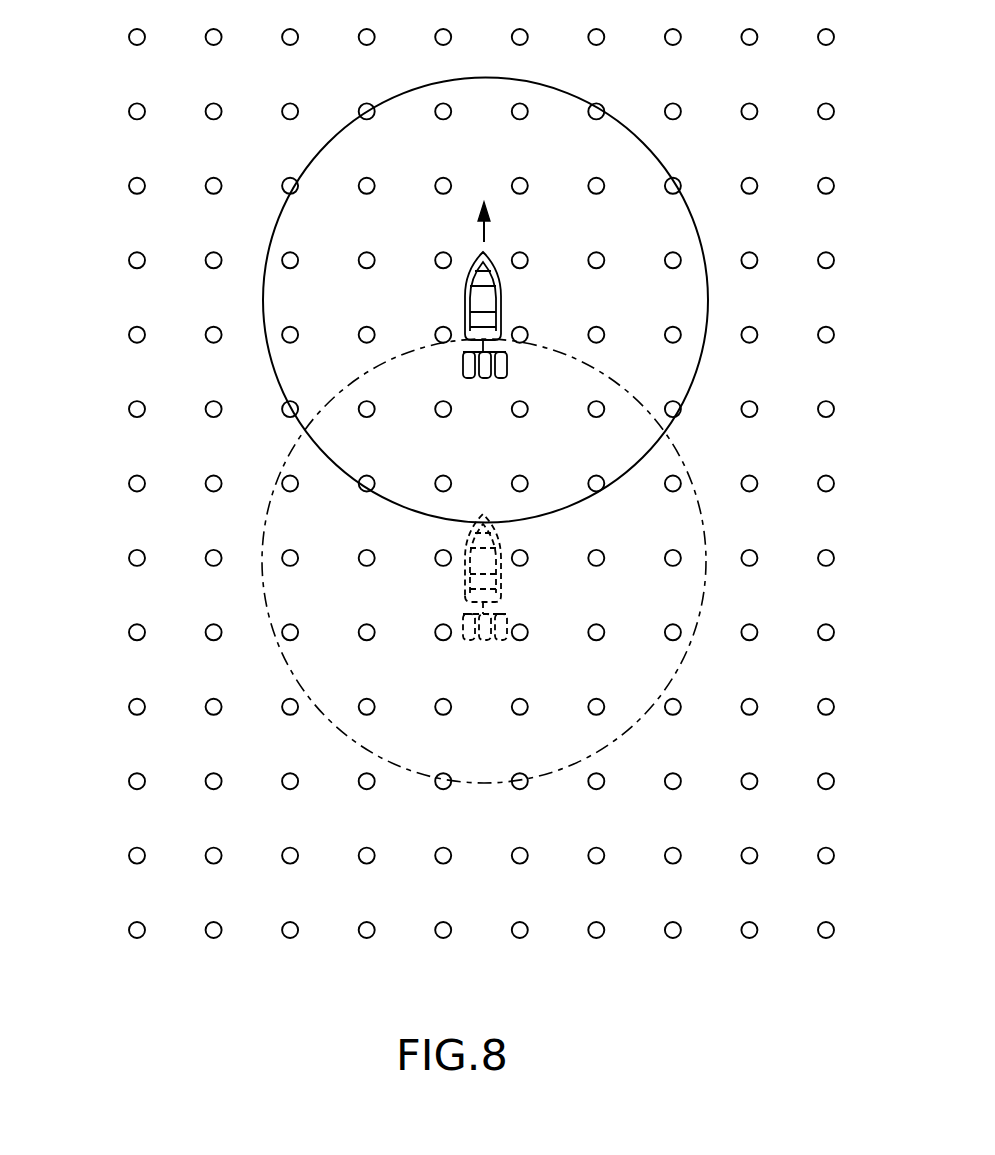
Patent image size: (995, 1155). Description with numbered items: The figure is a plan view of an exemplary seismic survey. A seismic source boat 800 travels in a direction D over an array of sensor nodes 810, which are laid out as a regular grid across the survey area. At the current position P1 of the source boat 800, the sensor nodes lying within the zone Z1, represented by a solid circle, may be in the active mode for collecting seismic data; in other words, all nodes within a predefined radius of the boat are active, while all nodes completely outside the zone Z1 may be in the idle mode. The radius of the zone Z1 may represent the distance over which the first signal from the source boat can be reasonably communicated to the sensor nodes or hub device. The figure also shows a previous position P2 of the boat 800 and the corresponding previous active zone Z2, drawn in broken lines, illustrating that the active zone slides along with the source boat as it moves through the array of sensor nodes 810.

The seismic source boat 800 is at (524, 297).
The array of sensor nodes 810 is at (100, 25).
The zone Z1 is at (652, 153).
The previous active zone Z2 is at (678, 453).
The current position P1 is at (560, 238).
The previous position P2 is at (500, 577).
The direction D is at (483, 210).